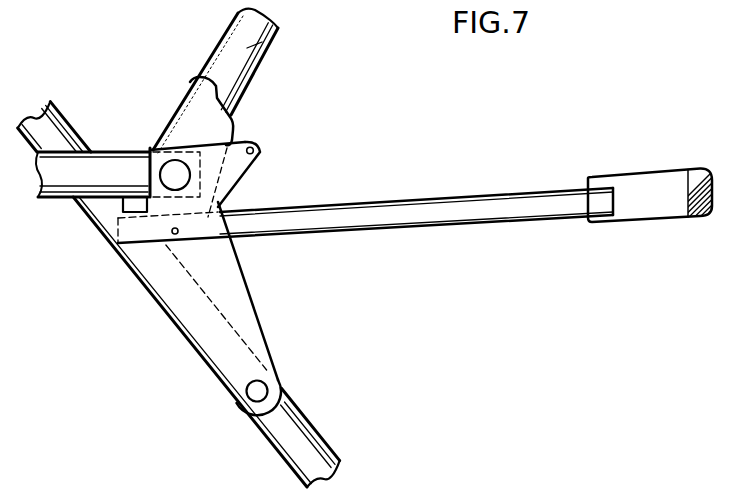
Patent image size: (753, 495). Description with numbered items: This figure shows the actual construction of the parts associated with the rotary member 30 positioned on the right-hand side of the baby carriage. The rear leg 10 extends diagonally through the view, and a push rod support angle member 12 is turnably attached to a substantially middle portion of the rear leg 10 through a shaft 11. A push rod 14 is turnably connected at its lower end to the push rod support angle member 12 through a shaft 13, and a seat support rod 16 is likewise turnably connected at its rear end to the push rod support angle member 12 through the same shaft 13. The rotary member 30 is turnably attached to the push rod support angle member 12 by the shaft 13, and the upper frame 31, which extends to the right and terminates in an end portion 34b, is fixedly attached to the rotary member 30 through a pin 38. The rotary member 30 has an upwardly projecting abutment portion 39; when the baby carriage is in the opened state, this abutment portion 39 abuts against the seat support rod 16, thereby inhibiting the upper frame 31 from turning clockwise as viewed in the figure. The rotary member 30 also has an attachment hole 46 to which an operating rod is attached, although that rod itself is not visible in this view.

The rear leg 10 is at (283, 427).
The shaft 11 is at (262, 380).
The push rod support angle member 12 is at (197, 97).
The shaft 13 is at (147, 152).
The push rod 14 is at (277, 47).
The seat support rod 16 is at (72, 188).
The rotary member 30 is at (227, 168).
The upper frame 31 is at (400, 216).
The end stop 34b is at (637, 178).
The pin 38 is at (172, 233).
The abutment portion 39 is at (118, 215).
The attachment hole 46 is at (262, 145).